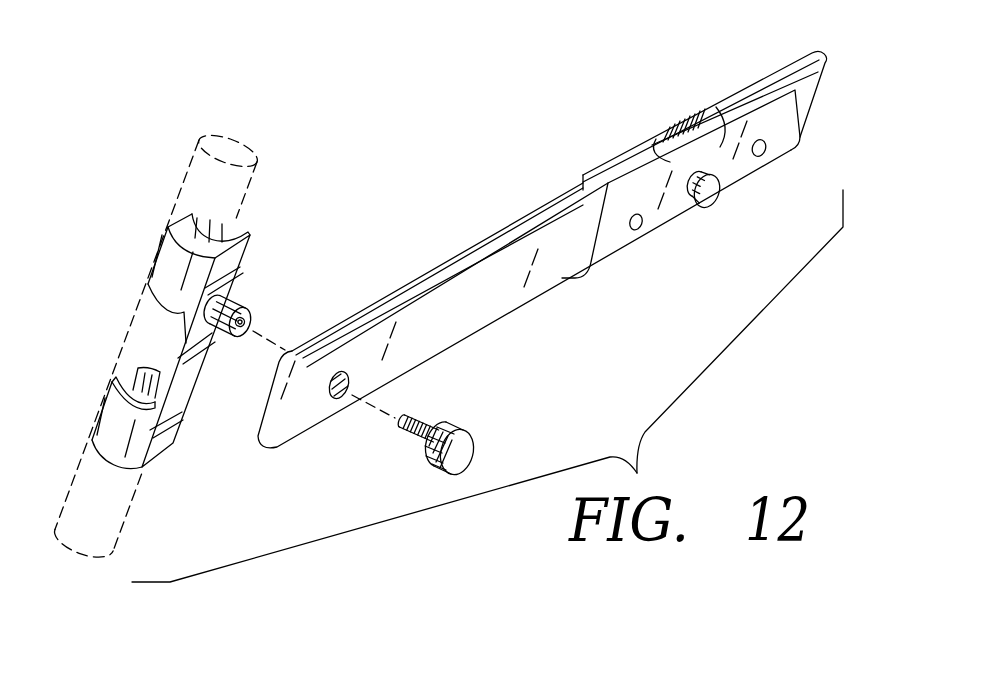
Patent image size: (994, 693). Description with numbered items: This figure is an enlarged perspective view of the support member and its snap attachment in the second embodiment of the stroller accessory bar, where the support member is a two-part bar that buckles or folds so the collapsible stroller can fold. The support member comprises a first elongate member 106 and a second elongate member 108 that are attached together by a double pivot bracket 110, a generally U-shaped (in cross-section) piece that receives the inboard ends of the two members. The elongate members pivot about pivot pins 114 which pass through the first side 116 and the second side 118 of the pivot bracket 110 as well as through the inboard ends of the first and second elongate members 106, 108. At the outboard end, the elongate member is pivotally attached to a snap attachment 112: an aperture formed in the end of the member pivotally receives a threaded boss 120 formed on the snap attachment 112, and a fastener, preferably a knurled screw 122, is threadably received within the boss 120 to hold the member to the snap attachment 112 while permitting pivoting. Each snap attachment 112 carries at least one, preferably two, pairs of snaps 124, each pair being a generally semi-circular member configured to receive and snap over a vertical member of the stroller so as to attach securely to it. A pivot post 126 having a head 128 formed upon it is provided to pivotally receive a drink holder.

The first elongate member 106 is at (415, 287).
The second elongate member 108 is at (802, 63).
The double pivot bracket 110 is at (748, 192).
The snap attachment 112 is at (175, 441).
The pivot pin 114 is at (637, 228).
The first side of the pivot bracket 116 is at (720, 147).
The second side of the pivot bracket 118 is at (670, 123).
The threaded boss 120 is at (233, 303).
The knurled screw 122 is at (452, 422).
The snaps 124 is at (152, 267).
The pivot post 126 is at (686, 202).
The head 128 is at (712, 203).